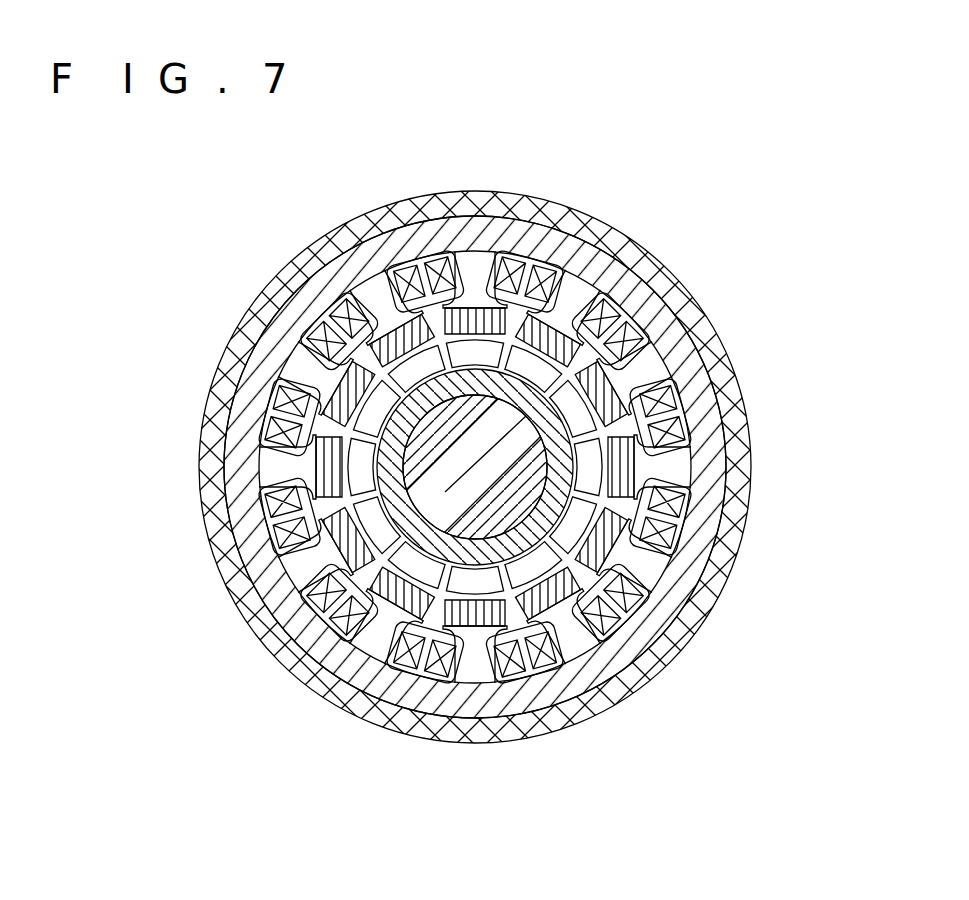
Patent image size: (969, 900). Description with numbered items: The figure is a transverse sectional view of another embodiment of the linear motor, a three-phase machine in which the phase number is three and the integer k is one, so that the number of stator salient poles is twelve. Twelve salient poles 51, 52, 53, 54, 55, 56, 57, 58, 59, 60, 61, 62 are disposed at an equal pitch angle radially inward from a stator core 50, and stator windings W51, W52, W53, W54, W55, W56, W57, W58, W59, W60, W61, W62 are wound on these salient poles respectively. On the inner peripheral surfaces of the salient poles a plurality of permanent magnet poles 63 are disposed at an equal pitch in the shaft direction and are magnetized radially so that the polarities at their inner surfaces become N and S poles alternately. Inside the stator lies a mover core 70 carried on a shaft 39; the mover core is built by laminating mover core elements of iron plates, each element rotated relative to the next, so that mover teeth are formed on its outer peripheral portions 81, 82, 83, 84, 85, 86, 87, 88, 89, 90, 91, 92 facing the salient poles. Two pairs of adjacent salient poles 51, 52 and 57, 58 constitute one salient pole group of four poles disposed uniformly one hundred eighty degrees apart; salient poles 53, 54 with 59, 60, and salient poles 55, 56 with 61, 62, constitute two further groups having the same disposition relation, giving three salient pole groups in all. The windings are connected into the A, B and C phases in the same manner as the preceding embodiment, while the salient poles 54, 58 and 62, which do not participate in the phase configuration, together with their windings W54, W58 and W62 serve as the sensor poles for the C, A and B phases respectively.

The shaft 39 is at (502, 483).
The stator core 50 is at (722, 385).
The salient pole 51 is at (474, 300).
The salient pole 52 is at (540, 360).
The salient pole 53 is at (573, 402).
The salient pole 54 is at (665, 467).
The salient pole 55 is at (630, 590).
The salient pole 56 is at (577, 648).
The salient pole 57 is at (476, 690).
The salient pole 58 is at (383, 650).
The salient pole 59 is at (305, 565).
The salient pole 60 is at (287, 460).
The salient pole 61 is at (290, 370).
The salient pole 62 is at (377, 287).
The stator winding W51 is at (428, 270).
The stator winding W52 is at (548, 262).
The stator winding W53 is at (600, 338).
The stator winding W54 is at (665, 431).
The stator winding W55 is at (667, 542).
The stator winding W56 is at (612, 630).
The stator winding W57 is at (538, 632).
The stator winding W58 is at (427, 653).
The stator winding W59 is at (312, 608).
The stator winding W60 is at (282, 503).
The stator winding W61 is at (296, 392).
The stator winding W62 is at (362, 303).
The permanent magnet poles 63 is at (506, 328).
The mover core 70 is at (582, 437).
The outer peripheral portion 81 is at (473, 347).
The outer peripheral portion 82 is at (578, 300).
The outer peripheral portion 83 is at (630, 380).
The outer peripheral portion 84 is at (525, 443).
The outer peripheral portion 85 is at (622, 566).
The outer peripheral portion 86 is at (580, 648).
The outer peripheral portion 87 is at (482, 650).
The outer peripheral portion 88 is at (388, 622).
The outer peripheral portion 89 is at (487, 530).
The outer peripheral portion 90 is at (360, 478).
The outer peripheral portion 91 is at (345, 390).
The outer peripheral portion 92 is at (395, 328).